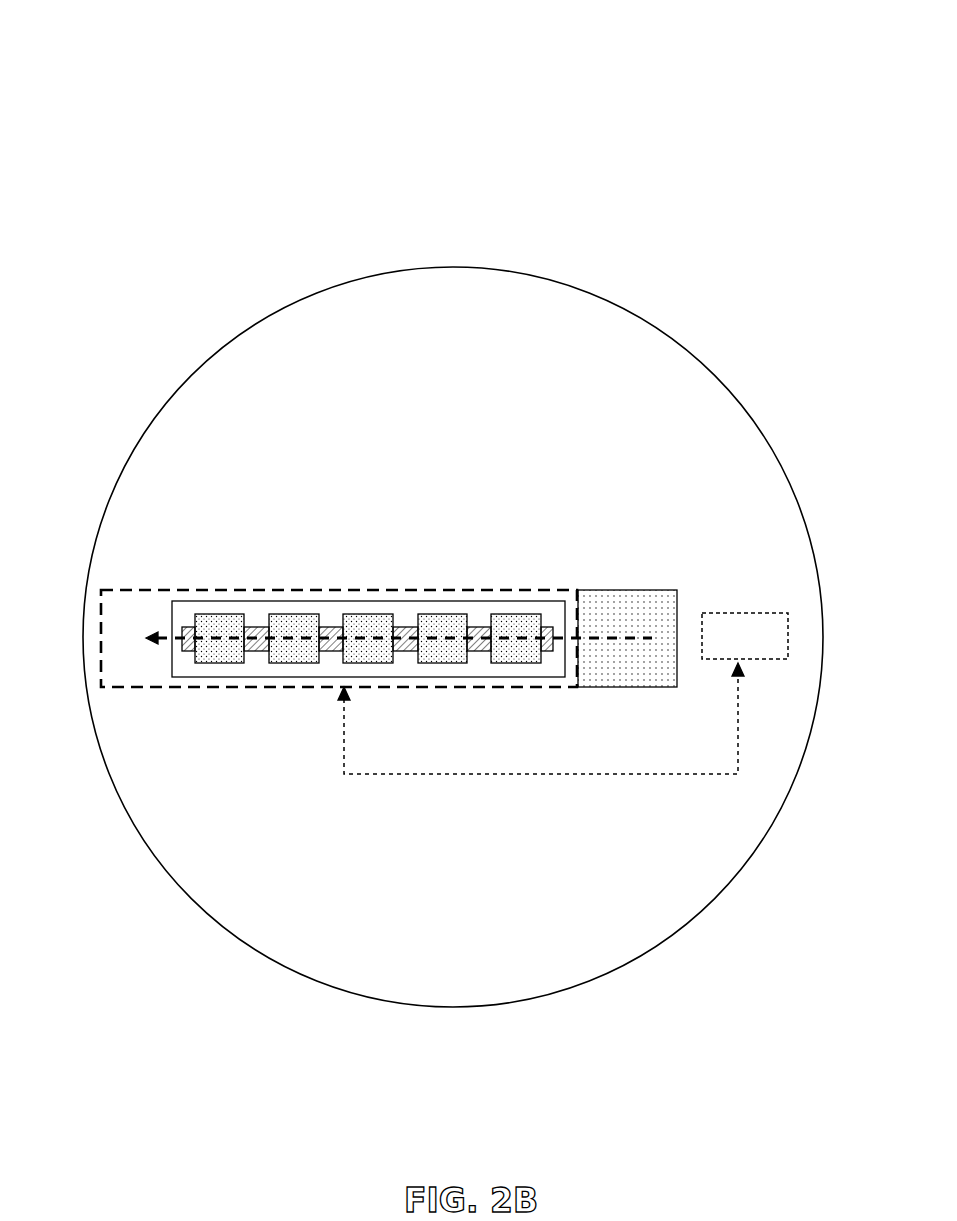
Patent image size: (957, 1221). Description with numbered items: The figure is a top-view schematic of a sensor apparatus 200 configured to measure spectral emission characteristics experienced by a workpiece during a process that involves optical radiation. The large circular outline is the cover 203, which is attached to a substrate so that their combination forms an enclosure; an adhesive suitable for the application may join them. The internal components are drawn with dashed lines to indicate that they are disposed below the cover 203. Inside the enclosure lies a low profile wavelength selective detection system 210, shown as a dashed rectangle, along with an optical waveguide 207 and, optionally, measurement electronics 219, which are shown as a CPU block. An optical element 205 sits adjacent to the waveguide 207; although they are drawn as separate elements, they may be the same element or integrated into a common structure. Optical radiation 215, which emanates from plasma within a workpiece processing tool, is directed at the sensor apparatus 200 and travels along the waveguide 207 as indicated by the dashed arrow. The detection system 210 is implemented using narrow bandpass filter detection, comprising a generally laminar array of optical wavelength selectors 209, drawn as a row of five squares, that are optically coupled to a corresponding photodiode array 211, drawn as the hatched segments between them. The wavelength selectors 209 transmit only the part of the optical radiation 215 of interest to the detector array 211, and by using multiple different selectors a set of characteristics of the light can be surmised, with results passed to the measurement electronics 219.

The sensor apparatus 200 is at (79, 45).
The cover 203 is at (470, 247).
The optical element 205 is at (616, 590).
The optical waveguide 207 is at (465, 600).
The optical wavelength selectors 209 is at (219, 613).
The low profile wavelength selective detection system 210 is at (134, 589).
The photodiode array 211 is at (188, 647).
The optical radiation 215 is at (603, 641).
The measurement electronics 219 is at (750, 612).